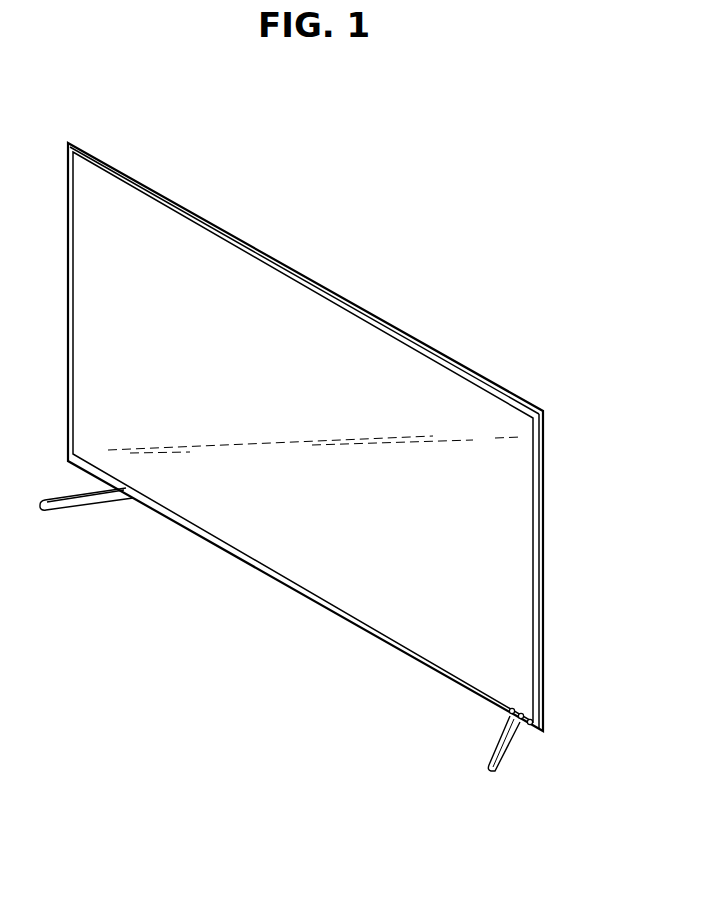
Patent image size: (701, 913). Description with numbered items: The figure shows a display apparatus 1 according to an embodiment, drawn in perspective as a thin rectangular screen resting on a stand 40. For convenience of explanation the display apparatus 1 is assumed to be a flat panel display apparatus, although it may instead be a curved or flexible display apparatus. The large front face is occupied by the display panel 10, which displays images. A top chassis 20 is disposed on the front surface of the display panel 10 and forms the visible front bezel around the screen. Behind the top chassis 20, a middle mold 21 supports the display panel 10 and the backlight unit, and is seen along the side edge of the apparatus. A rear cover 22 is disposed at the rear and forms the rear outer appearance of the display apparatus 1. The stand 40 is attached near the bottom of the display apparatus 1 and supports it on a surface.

The display apparatus 1 is at (403, 163).
The display panel 10 is at (351, 340).
The frame 20 is at (486, 384).
The front frame portion 21 is at (539, 481).
The rear frame portion 22 is at (543, 571).
The stand 40 is at (80, 512).